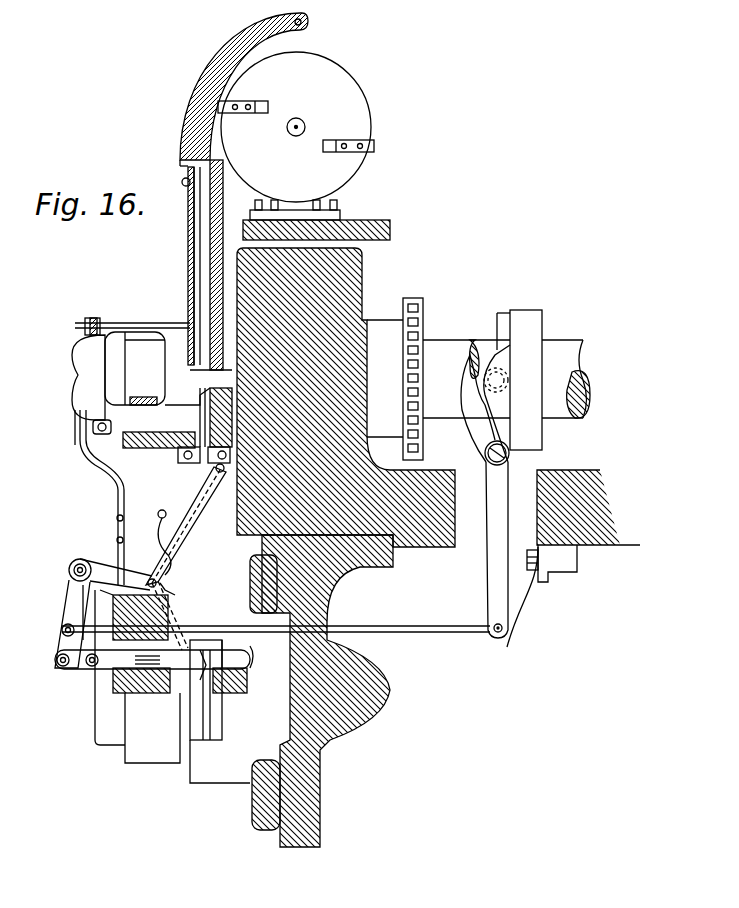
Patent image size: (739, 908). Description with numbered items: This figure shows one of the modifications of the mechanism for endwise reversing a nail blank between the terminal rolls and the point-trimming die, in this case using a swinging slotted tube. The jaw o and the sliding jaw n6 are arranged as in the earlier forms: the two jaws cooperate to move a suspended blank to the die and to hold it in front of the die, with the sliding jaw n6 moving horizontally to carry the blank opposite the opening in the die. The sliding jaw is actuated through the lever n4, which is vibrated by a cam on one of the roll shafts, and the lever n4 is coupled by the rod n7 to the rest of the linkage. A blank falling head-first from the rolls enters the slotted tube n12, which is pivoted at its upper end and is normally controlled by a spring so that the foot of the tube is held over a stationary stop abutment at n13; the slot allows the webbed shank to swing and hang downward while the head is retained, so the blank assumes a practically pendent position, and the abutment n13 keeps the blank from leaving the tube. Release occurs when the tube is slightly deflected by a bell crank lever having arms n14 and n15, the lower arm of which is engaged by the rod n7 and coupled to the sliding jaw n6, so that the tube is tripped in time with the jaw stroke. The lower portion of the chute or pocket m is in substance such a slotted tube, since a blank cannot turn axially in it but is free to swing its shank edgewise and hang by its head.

The lever n4 is at (485, 491).
The rod n7 is at (276, 615).
The bell crank lever arm n15 is at (108, 575).
The bell crank lever arm n14 is at (70, 613).
The sliding jaw n6 is at (152, 658).
The slotted tube n12 is at (185, 540).
The stationary stop abutment n13 is at (168, 592).
The chute or pocket m is at (178, 605).
The jaw o is at (218, 690).